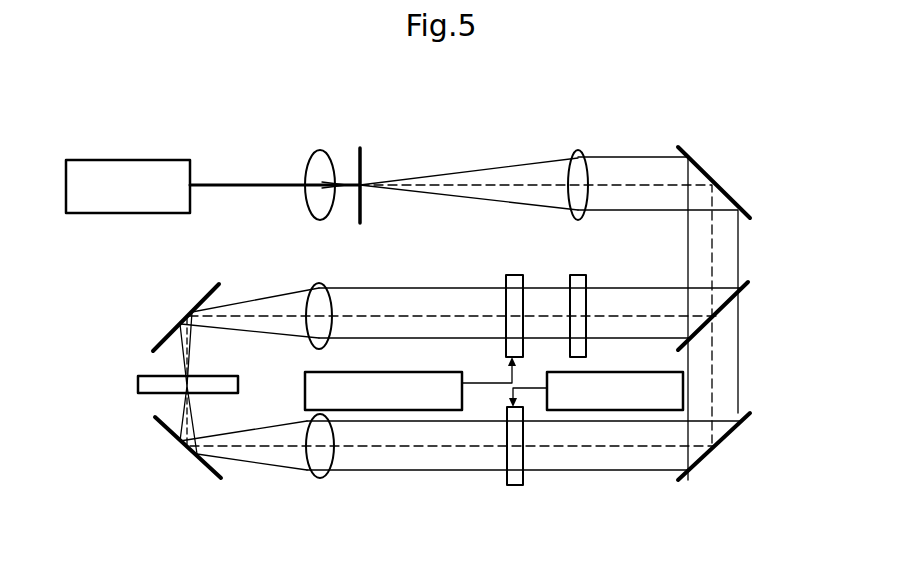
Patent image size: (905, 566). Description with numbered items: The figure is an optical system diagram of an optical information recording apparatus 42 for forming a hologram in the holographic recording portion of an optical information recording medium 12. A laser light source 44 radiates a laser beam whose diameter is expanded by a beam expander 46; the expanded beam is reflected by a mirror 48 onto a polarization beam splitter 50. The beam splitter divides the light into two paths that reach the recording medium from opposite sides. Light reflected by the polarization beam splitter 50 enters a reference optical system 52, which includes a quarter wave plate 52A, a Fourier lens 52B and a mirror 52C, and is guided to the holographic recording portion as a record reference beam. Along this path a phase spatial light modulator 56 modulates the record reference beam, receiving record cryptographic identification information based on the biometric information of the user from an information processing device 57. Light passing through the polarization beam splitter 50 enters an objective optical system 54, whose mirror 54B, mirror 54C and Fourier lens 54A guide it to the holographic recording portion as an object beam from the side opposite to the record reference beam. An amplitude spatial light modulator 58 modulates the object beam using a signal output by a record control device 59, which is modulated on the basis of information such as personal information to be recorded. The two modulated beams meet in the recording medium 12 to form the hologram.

The optical information recording apparatus 42 is at (230, 110).
The laser light source 44 is at (153, 160).
The beam expander 46 is at (303, 150).
The mirror 48 is at (700, 163).
The polarization beam splitter 50 is at (752, 286).
The reference optical system 52 is at (165, 285).
The quarter wave plate 52A is at (586, 302).
The Fourier lens 52B is at (307, 349).
The mirror 52C is at (183, 321).
The phase spatial light modulator 56 is at (506, 302).
The information processing device 57 is at (430, 353).
The amplitude spatial light modulator 58 is at (507, 480).
The record control device 59 is at (627, 353).
The optical information recording medium 12 is at (138, 386).
The objective optical system 54 is at (740, 487).
The Fourier lens 54A is at (311, 480).
The mirror 54B is at (727, 440).
The mirror 54C is at (176, 437).